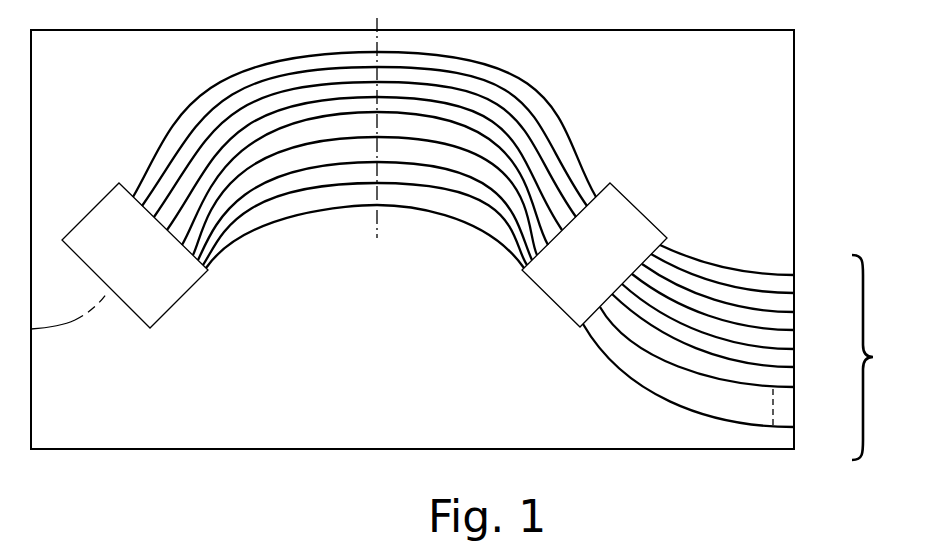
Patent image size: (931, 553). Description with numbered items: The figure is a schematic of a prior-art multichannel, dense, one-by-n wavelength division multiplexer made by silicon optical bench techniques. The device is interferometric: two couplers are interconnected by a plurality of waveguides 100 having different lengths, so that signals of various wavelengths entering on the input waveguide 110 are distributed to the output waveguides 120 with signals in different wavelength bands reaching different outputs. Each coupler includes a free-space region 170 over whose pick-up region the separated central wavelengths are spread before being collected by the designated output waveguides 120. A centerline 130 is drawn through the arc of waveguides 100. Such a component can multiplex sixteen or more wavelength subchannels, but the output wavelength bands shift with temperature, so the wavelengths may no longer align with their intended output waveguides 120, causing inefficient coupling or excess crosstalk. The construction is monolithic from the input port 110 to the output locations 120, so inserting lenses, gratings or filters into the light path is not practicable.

The waveguides 100 is at (528, 86).
The input waveguide 110 is at (53, 327).
The output waveguides 120 is at (737, 270).
The center line of symmetry 130 is at (372, 238).
The free-space region 170 is at (180, 297).